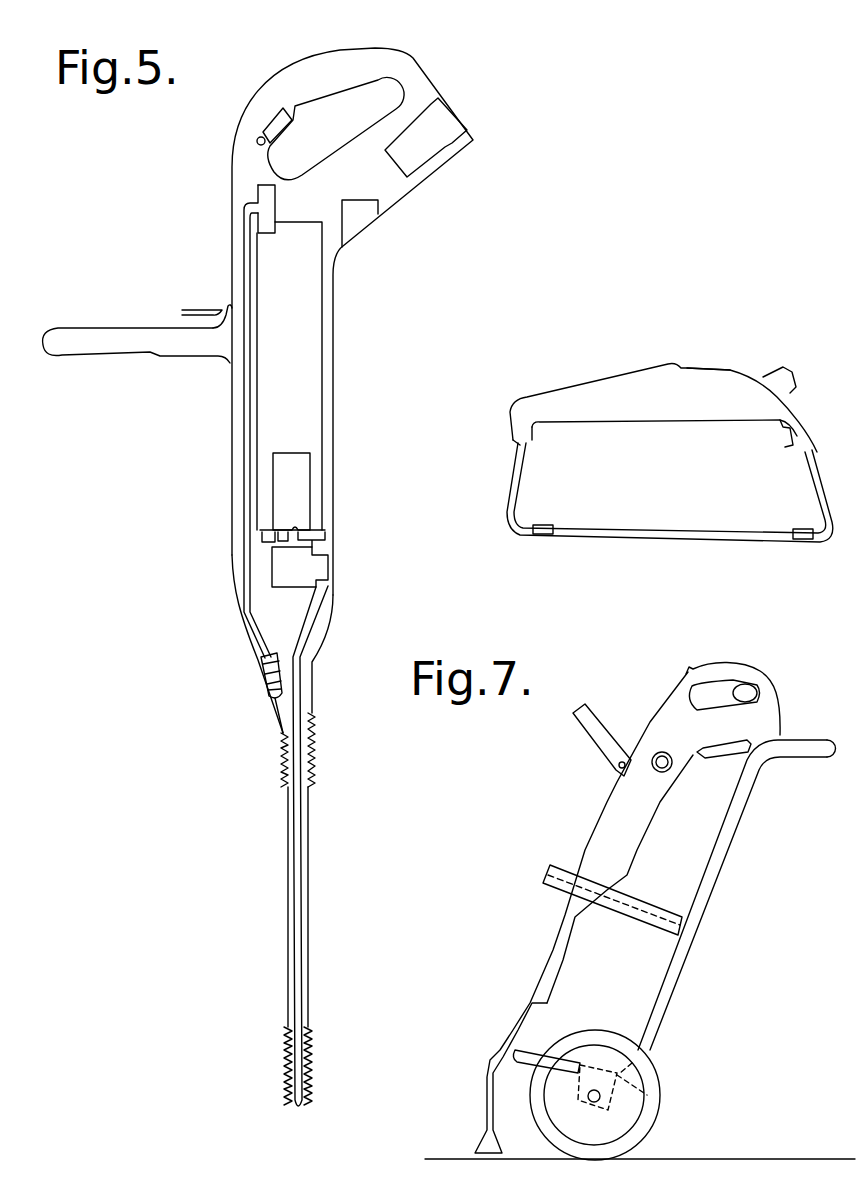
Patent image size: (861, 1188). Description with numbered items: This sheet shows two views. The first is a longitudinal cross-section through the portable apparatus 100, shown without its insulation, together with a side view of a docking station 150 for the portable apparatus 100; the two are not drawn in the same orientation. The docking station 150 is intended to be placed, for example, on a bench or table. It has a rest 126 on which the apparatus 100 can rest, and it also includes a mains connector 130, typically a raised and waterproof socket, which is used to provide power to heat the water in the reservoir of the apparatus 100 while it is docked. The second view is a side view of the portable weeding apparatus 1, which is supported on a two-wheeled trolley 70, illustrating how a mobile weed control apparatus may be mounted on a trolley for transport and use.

In FIG. 5, the portable apparatus 100 is at (188, 246).
In FIG. 7, the docking station 150 is at (553, 349).
In FIG. 7, the rest 126 is at (727, 385).
In FIG. 7, the mains connector 130 is at (793, 378).
In FIG. 7, the portable apparatus 1 is at (596, 808).
In FIG. 7, the two-wheeled trolley 70 is at (752, 808).